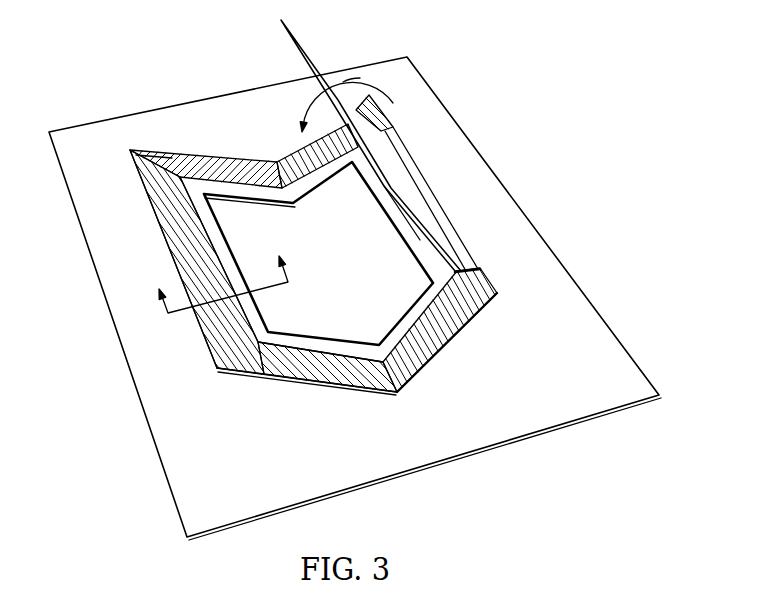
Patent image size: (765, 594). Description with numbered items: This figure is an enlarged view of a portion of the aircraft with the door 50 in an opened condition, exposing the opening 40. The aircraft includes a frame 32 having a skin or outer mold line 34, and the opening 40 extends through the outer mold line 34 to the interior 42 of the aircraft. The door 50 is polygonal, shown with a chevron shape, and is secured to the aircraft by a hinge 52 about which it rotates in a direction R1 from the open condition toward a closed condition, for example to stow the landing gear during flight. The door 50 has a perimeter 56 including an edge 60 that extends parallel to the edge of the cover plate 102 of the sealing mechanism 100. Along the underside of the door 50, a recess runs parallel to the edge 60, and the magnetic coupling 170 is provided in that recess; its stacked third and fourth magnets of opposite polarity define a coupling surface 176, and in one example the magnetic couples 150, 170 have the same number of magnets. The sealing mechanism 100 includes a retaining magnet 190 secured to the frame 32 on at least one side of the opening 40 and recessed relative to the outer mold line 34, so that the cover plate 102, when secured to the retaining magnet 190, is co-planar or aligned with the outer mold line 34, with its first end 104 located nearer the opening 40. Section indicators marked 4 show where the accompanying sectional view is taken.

The frame 32 is at (513, 428).
The outer mold line 34 is at (588, 379).
The opening 40 is at (297, 266).
The interior 42 is at (281, 210).
The door 50 is at (430, 212).
The hinge 52 is at (453, 250).
The perimeter 56 is at (381, 123).
The edge 60 is at (381, 178).
The sealing mechanism 100 is at (191, 257).
The cover plate 102 is at (162, 197).
The first end 104 is at (200, 209).
The magnetic couple 150 is at (248, 305).
The magnetic coupling 170 is at (289, 48).
The coupling surface 176 is at (313, 88).
The retaining magnet 190 is at (170, 157).
The section line 4- 4 is at (217, 272).
The direction of door rotation R1 is at (343, 82).